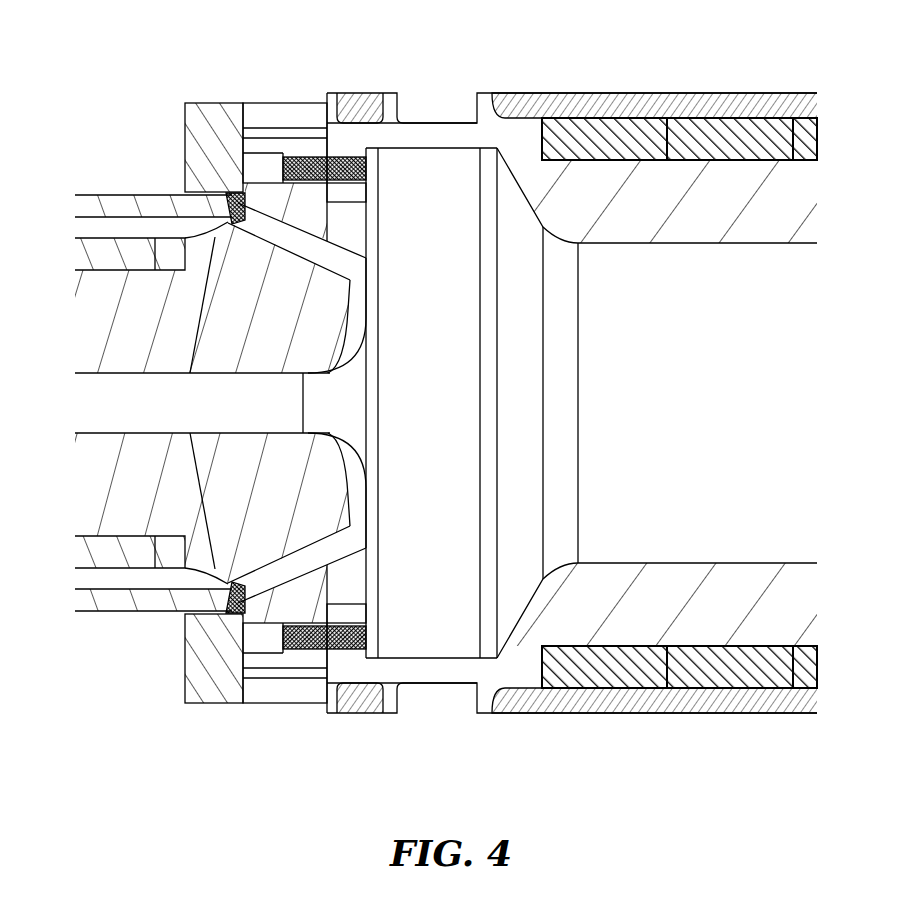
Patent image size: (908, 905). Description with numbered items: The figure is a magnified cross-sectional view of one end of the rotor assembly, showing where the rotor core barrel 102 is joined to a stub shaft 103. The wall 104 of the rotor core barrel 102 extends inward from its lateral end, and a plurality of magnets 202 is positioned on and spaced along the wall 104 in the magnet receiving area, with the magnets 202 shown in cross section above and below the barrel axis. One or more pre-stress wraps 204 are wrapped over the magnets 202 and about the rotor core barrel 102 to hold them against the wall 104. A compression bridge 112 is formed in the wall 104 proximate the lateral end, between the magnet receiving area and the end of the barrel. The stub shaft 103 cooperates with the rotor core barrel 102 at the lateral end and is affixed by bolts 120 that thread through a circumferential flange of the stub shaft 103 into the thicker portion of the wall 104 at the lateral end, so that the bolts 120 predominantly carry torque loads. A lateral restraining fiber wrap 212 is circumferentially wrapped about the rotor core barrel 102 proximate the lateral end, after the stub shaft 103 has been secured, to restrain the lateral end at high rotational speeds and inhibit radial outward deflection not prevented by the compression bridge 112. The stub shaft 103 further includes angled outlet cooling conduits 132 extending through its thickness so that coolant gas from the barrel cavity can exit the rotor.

The rotor core barrel 102 is at (822, 250).
The stub shaft 103 is at (102, 335).
The wall 104 is at (800, 198).
The compression bridge 112 is at (430, 110).
The bolt 120 is at (310, 160).
The outlet cooling conduit 132 is at (255, 218).
The magnet 202 is at (803, 128).
The pre-stress wrap 204 is at (549, 100).
The lateral restraining fiber wrap 212 is at (365, 95).